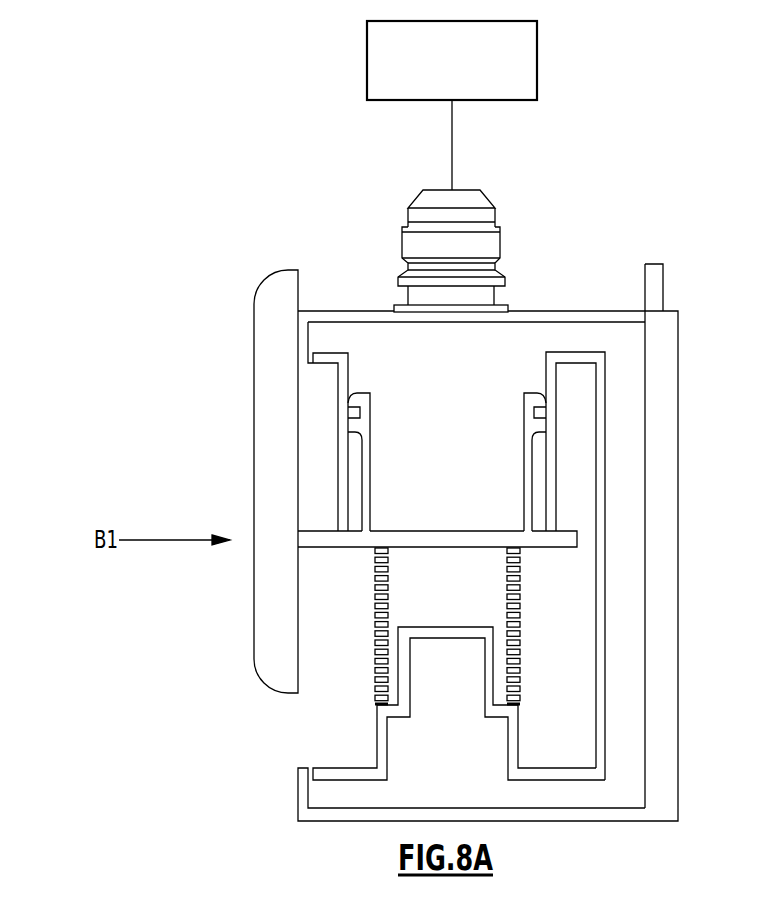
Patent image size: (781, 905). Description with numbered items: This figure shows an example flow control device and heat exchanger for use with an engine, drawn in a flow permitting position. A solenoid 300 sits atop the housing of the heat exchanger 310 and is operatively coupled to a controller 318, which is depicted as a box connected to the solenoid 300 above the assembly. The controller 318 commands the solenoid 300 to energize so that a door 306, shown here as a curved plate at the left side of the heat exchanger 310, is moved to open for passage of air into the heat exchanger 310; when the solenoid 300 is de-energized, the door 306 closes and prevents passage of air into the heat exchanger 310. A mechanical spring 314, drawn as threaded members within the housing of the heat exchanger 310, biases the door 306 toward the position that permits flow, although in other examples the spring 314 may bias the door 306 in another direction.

The solenoid 300 is at (481, 202).
The door 306 is at (265, 295).
The heat exchanger 310 is at (668, 578).
The mechanical spring 314 is at (514, 660).
The controller 318 is at (474, 86).